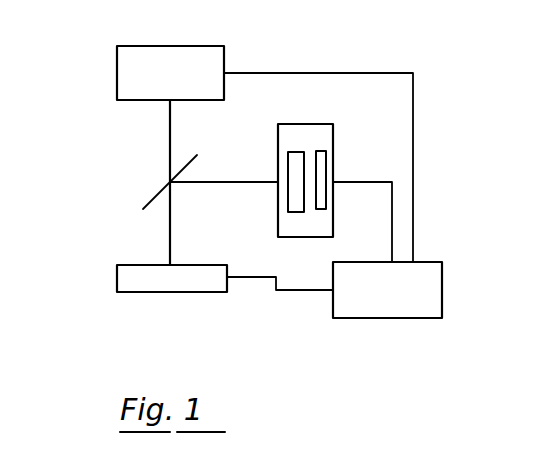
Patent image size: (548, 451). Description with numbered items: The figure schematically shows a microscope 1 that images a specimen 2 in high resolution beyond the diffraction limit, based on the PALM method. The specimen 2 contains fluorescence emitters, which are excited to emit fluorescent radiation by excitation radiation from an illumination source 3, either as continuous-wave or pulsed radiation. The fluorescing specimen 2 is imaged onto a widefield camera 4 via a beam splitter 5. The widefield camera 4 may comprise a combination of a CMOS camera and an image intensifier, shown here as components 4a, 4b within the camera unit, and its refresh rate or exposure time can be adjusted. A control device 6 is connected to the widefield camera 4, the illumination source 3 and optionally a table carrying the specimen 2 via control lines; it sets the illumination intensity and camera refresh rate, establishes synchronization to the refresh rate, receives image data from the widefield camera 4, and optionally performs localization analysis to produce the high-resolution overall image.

The microscope 1 is at (83, 165).
The specimen 2 is at (120, 277).
The illumination source 3 is at (212, 50).
The widefield camera 4 is at (337, 194).
The contactor coil 4a is at (325, 172).
The contactor contact 4b is at (297, 210).
The beam splitter 5 is at (152, 185).
The control device 6 is at (432, 300).